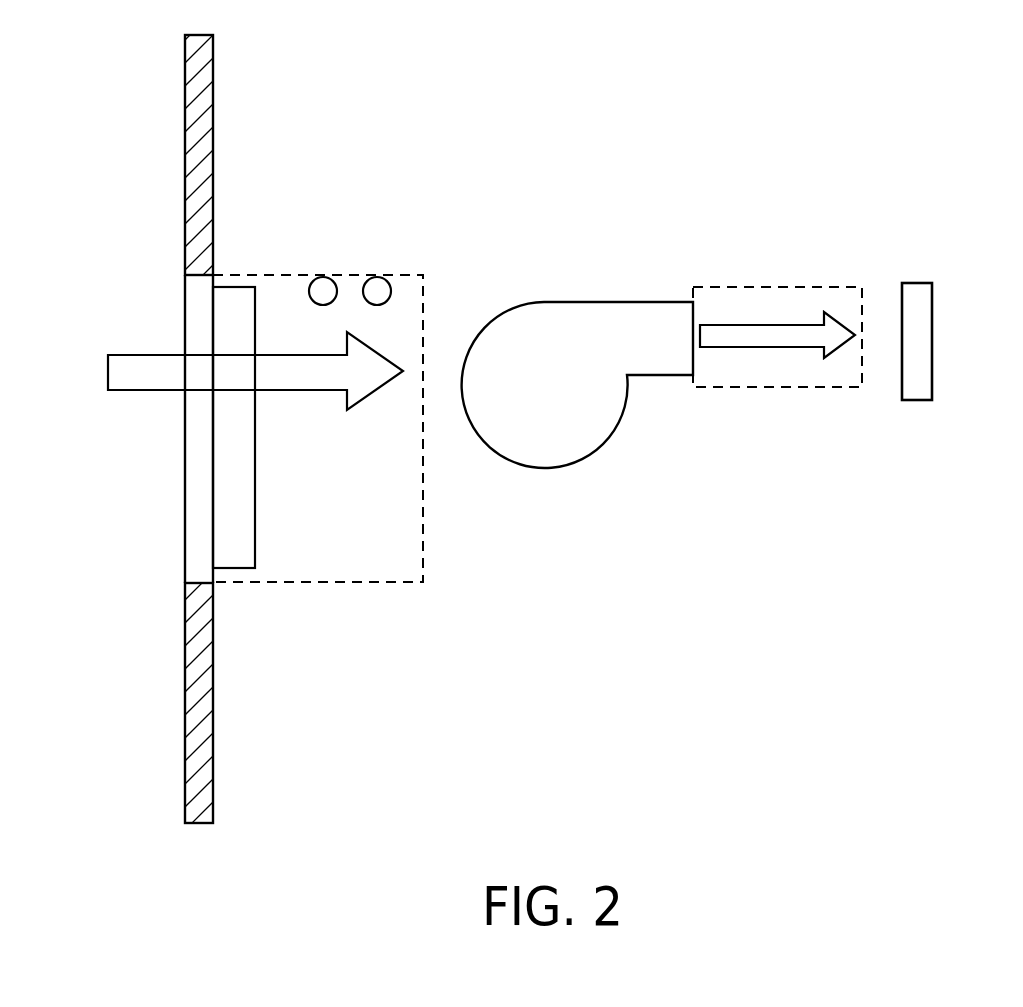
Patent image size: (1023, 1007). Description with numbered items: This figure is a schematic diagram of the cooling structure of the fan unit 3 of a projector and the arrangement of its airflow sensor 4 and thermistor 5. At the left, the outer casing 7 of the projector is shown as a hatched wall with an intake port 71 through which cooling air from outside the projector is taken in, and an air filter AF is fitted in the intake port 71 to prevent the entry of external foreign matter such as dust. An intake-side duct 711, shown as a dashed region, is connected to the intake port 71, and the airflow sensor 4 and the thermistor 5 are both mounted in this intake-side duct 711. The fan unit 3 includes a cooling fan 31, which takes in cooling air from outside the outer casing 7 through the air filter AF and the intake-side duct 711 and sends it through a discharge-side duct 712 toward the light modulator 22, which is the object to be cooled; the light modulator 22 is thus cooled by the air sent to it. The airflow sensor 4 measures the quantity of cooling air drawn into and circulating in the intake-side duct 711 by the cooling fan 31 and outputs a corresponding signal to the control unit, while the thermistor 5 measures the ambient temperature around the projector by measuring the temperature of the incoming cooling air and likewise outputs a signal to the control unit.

The outer casing 7 is at (209, 82).
The intake port 71 is at (187, 287).
The air filter AF is at (237, 297).
The intake-side duct 711 is at (335, 583).
The thermistor 5 is at (325, 278).
The airflow sensor 4 is at (375, 278).
The cooling fan 31 is at (572, 302).
The fan unit 3 is at (577, 351).
The discharge-side duct 712 is at (775, 287).
The light modulator 22 is at (932, 362).